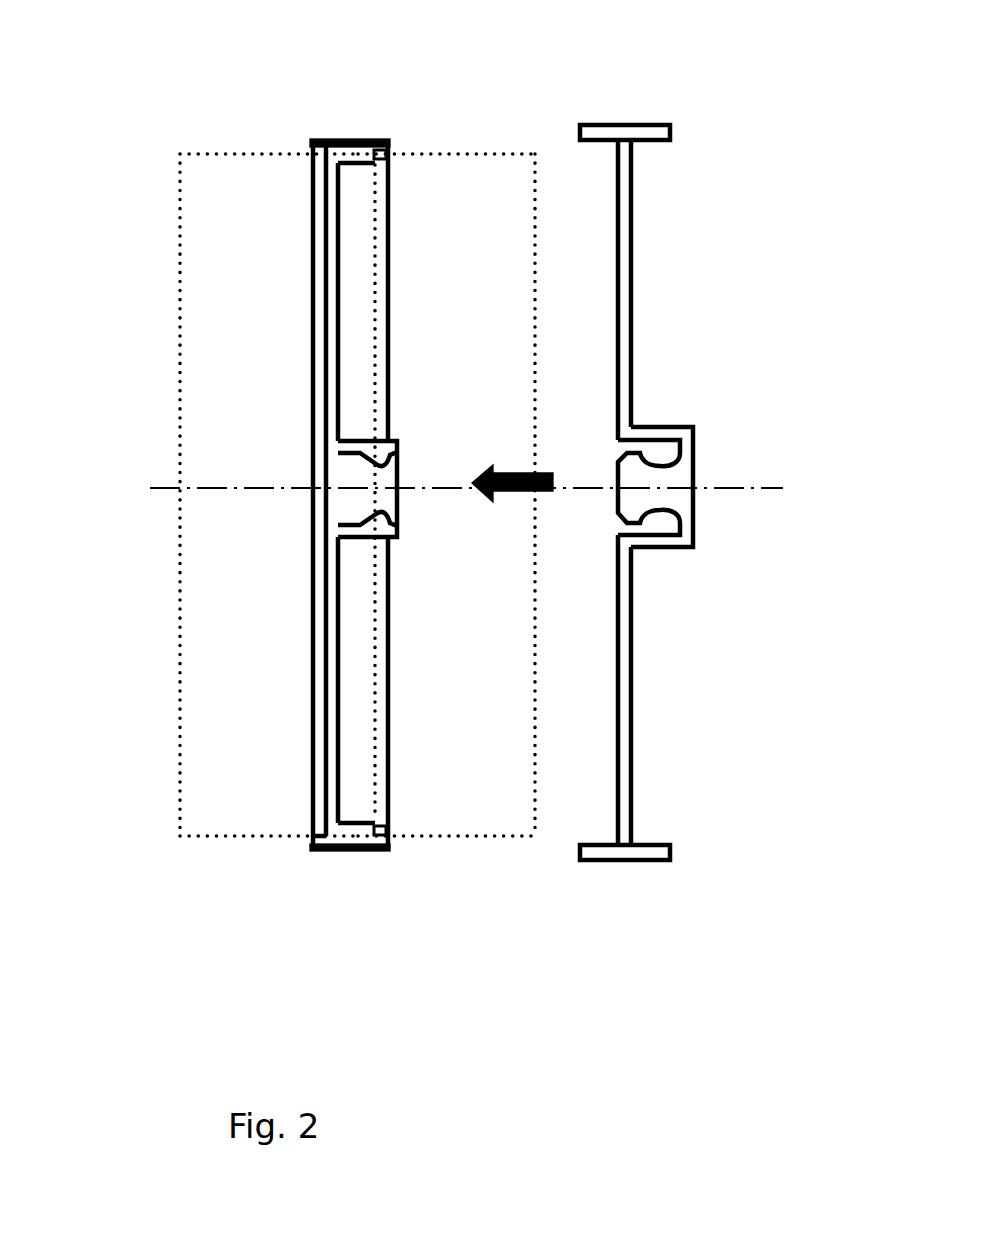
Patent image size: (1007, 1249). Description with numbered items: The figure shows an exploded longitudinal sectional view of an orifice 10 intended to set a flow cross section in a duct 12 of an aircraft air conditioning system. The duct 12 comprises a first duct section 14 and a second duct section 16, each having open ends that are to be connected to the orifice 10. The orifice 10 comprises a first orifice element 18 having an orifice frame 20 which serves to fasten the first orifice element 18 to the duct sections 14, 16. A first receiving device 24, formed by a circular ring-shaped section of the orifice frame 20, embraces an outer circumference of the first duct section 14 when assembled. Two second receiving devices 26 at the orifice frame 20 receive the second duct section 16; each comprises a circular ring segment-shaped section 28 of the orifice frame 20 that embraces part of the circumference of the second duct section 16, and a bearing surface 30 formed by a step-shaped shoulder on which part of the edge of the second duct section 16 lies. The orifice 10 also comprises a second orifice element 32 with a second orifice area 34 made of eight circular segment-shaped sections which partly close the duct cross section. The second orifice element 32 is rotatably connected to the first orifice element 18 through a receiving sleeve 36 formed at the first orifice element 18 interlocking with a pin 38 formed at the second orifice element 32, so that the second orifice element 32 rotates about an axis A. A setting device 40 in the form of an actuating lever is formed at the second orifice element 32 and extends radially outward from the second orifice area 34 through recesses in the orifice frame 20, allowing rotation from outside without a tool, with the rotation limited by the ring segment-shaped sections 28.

The orifice 10 is at (760, 230).
The duct 12 is at (168, 138).
The first duct section 14 is at (243, 153).
The second duct section 16 is at (485, 153).
The first orifice element 18 is at (388, 885).
The orifice frame 20 is at (342, 140).
The first receiving device 24 is at (311, 145).
The second receiving device 26 is at (405, 175).
The circular ring segment-shaped section 28 is at (378, 140).
The bearing surface 30 is at (390, 153).
The second orifice element 32 is at (648, 900).
The second orifice area 34 is at (632, 275).
The receiving sleeve 36 is at (395, 432).
The pin 38 is at (640, 470).
The setting device 40 is at (623, 127).
The axis A is at (762, 485).